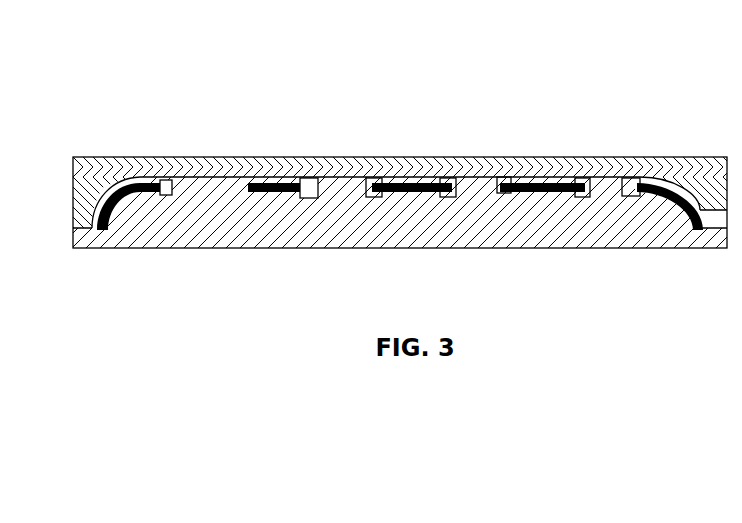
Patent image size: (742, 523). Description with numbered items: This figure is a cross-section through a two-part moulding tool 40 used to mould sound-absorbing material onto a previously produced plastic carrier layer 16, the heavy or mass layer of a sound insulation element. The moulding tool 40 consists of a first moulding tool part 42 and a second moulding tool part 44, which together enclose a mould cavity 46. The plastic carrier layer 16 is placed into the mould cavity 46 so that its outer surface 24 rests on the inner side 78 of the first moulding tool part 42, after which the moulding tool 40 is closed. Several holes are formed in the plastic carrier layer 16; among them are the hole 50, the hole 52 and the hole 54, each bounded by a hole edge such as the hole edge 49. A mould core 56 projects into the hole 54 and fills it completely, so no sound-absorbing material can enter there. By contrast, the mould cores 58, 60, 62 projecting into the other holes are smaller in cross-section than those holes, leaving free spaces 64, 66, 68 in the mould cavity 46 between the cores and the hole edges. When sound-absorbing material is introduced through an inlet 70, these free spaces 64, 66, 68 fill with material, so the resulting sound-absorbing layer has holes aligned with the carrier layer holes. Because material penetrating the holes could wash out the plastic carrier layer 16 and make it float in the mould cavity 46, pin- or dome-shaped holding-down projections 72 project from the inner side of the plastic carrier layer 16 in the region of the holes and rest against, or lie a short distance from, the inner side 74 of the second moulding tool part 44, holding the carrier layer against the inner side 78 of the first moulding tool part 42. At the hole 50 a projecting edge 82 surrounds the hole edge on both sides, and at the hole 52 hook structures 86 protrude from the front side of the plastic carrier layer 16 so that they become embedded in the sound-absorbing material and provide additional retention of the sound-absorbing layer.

The plastic carrier layer 16 is at (137, 205).
The outer surface 24 is at (322, 235).
The moulding tool 40 is at (559, 57).
The first moulding tool part 42 is at (208, 230).
The second moulding tool part 44 is at (152, 157).
The mould cavity 46 is at (262, 157).
The hole edge 49 is at (630, 215).
The hole 50 is at (510, 157).
The hole 52 is at (395, 157).
The hole 54 is at (152, 218).
The mould core 56 is at (200, 157).
The mould core 58 is at (590, 157).
The mould core 60 is at (455, 157).
The mould core 62 is at (363, 157).
The free space 64 is at (598, 205).
The free space 66 is at (446, 157).
The free space 68 is at (318, 157).
The inlet 70 is at (703, 157).
The holding-down projections 72 is at (288, 157).
The inner side 74 is at (540, 196).
The inner side 78 is at (130, 157).
The projecting edge 82 is at (520, 157).
The hook structures 86 is at (360, 200).